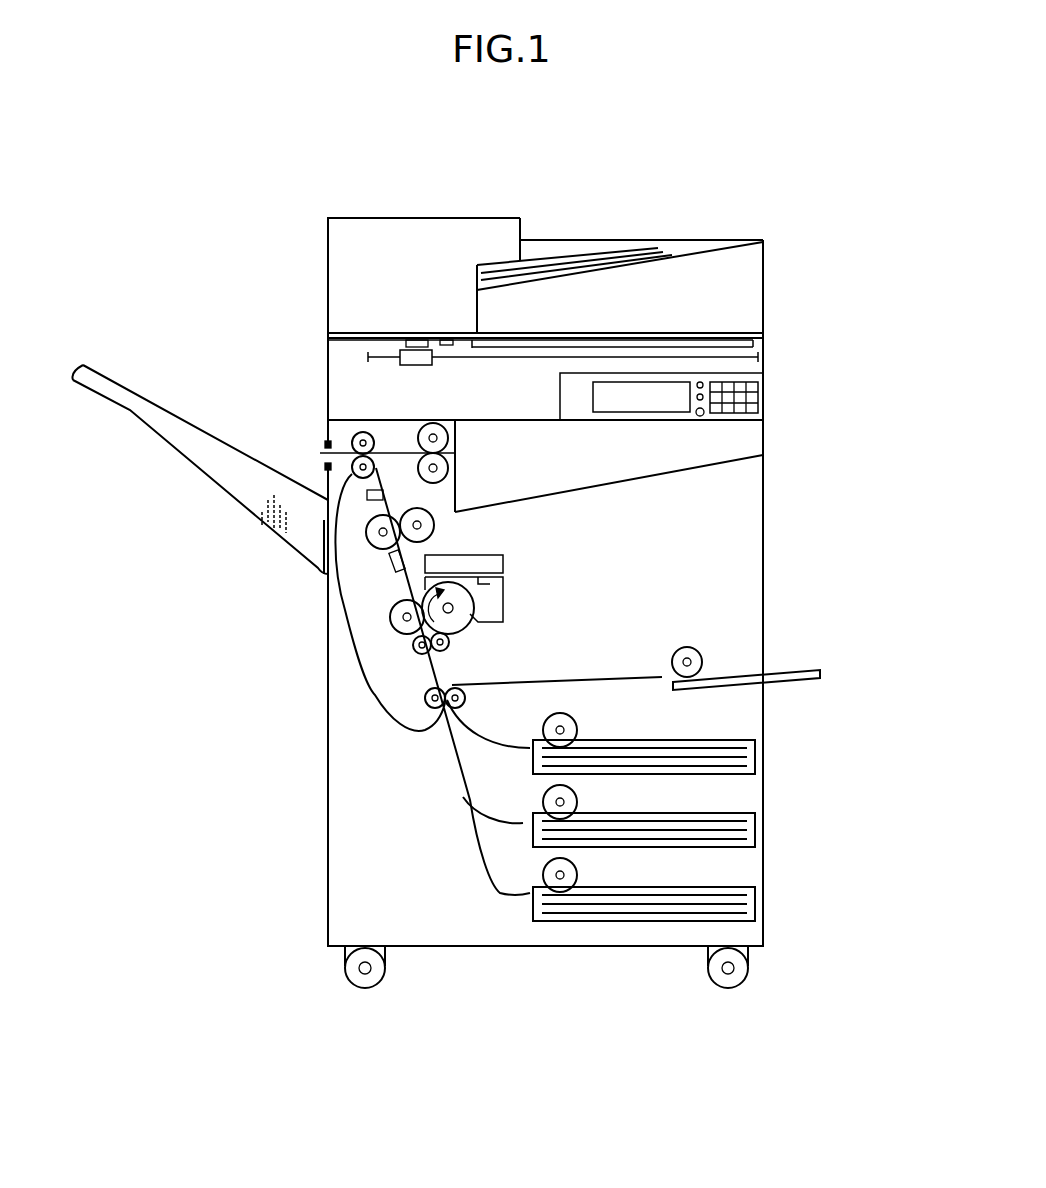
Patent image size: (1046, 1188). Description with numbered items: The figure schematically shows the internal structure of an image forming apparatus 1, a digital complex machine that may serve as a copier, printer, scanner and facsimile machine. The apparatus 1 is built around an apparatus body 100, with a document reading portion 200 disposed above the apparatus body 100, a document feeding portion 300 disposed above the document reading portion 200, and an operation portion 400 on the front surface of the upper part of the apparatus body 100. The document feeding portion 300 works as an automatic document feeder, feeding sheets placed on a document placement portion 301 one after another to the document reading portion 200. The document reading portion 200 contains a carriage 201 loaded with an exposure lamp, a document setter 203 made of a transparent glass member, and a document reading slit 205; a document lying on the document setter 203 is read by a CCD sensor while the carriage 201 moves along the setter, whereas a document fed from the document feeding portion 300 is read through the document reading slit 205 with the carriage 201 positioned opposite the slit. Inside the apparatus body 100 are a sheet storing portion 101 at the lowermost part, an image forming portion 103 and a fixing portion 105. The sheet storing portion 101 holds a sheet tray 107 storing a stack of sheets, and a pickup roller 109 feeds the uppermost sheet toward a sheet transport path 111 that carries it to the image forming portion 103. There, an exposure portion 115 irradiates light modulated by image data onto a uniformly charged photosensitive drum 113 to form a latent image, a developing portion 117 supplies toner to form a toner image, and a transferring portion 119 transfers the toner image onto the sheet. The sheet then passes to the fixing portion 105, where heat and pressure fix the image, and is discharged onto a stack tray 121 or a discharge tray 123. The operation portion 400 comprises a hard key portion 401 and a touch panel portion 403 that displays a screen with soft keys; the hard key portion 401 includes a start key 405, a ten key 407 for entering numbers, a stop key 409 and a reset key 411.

The image forming apparatus 1 is at (153, 216).
The apparatus body 100 is at (745, 598).
The sheet storing portion 101 is at (795, 766).
The image forming portion 103 is at (370, 612).
The fixing portion 105 is at (385, 550).
The sheet tray 107 is at (757, 895).
The pickup roller 109 is at (578, 730).
The sheet transport path 111 is at (432, 688).
The photosensitive drum 113 is at (458, 624).
The exposure portion 115 is at (500, 560).
The developing portion 117 is at (500, 600).
The transferring portion 119 is at (397, 630).
The stack tray 121 is at (244, 527).
The discharge tray 123 is at (604, 486).
The document reading portion 200 is at (345, 366).
The carriage 201 is at (415, 366).
The document setter 203 is at (753, 343).
The document reading slit 205 is at (412, 340).
The document feeding portion 300 is at (580, 233).
The document placement portion 301 is at (683, 245).
The operation portion 400 is at (785, 390).
The hard key portion 401 is at (773, 419).
The touch panel portion 403 is at (620, 400).
The start key 405 is at (699, 416).
The ten key 407 is at (715, 415).
The stop key 409 is at (697, 394).
The reset key 411 is at (700, 380).